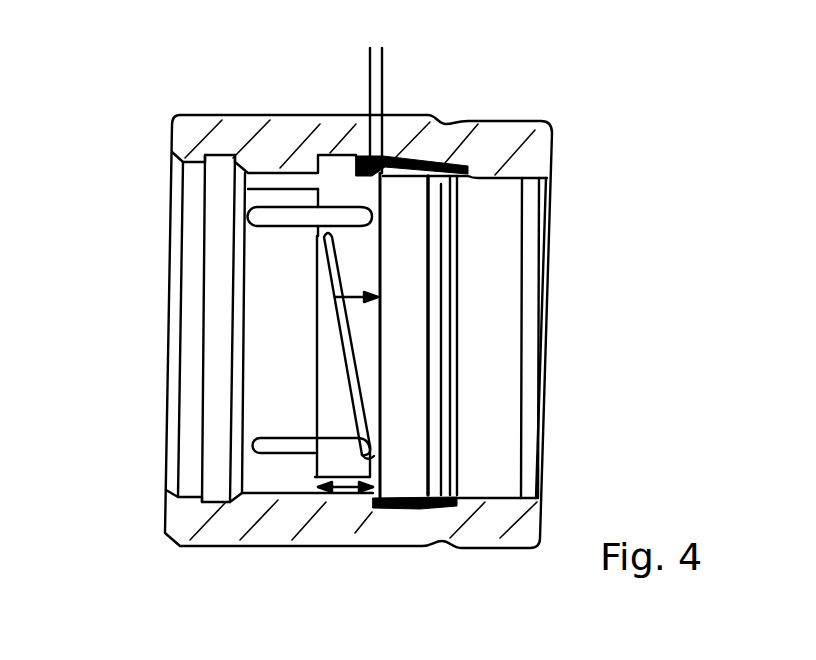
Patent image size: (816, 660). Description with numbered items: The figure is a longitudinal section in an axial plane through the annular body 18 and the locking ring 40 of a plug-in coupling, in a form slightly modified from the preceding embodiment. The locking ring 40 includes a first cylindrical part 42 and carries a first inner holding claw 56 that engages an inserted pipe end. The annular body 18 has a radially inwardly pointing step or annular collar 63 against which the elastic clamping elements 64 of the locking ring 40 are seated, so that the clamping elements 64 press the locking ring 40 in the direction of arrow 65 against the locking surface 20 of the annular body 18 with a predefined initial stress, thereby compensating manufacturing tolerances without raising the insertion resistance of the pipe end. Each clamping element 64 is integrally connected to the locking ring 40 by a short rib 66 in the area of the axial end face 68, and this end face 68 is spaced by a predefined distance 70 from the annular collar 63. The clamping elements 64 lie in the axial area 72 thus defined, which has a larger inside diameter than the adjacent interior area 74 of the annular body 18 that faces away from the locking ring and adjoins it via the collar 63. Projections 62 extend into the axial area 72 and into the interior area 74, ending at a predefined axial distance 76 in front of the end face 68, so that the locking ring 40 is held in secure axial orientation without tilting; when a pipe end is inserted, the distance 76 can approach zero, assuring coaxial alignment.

The annular body 18 is at (518, 533).
The locking surface 20 is at (462, 170).
The locking ring 40 is at (458, 432).
The first part 42 is at (398, 506).
The first inner holding claw 56 is at (440, 190).
The projections 62 is at (288, 213).
The annular collar 63 is at (320, 177).
The elastic clamping element 64 is at (325, 270).
The arrow 65 is at (350, 300).
The short rib 66 is at (372, 442).
The axial end face 68 is at (377, 252).
The predefined distance 70 is at (346, 490).
The axial area 72 is at (333, 417).
The interior area 74 is at (270, 370).
The axial distance 76 is at (442, 57).